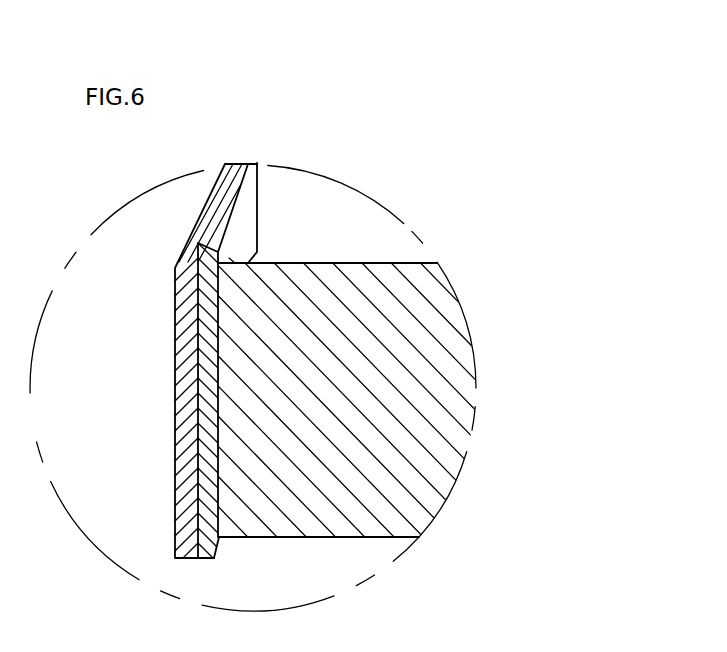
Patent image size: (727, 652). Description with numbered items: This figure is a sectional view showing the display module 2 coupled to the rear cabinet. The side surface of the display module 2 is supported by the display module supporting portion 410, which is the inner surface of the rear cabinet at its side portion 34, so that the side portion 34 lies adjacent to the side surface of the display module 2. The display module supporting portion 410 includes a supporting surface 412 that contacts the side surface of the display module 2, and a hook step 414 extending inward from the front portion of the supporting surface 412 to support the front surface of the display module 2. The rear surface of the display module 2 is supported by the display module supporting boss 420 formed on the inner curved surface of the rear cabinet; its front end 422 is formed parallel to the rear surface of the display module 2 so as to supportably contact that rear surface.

The display module 2 is at (318, 522).
The side portion 34 is at (175, 399).
The display module supporting portion 410 is at (190, 443).
The supporting surface 412 is at (200, 489).
The hook step 414 is at (226, 539).
The display module supporting boss 420 is at (248, 204).
The front end 422 is at (233, 258).